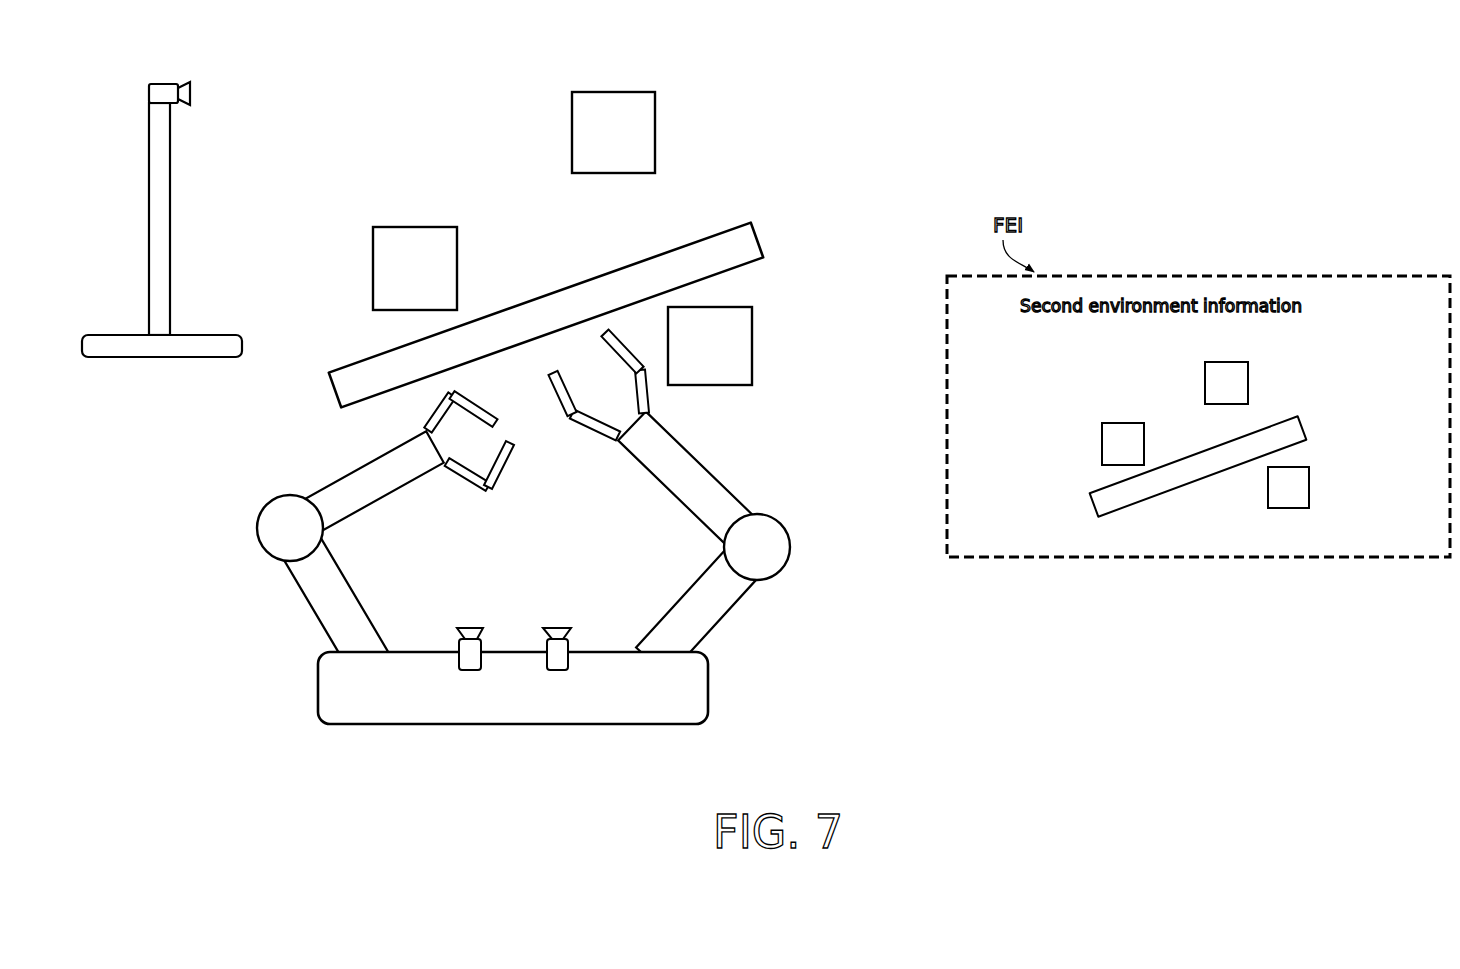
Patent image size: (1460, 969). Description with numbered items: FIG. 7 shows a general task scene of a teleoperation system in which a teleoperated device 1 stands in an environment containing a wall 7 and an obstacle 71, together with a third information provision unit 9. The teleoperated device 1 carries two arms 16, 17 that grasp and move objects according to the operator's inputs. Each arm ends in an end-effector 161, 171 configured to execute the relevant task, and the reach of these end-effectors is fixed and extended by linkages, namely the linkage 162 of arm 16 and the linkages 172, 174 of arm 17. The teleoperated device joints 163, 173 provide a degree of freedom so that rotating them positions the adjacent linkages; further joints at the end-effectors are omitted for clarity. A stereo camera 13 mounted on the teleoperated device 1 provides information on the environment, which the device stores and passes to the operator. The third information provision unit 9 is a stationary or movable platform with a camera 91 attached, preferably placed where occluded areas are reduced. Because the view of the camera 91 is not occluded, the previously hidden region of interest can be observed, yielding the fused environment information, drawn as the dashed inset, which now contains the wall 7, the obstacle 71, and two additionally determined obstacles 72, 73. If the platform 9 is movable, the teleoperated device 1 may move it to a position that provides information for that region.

The teleoperated device 1 is at (709, 684).
The stereo camera 13 is at (471, 622).
The arm 16 is at (677, 503).
The end-effector 161 is at (654, 393).
The linkage 162 is at (662, 464).
The teleoperated device joint 163 is at (754, 551).
The arm 17 is at (377, 492).
The end-effector 171 is at (370, 486).
The linkage 172 is at (401, 479).
The teleoperated device joint 173 is at (316, 525).
The linkage 174 is at (332, 609).
The wall 7 is at (761, 232).
The obstacle 71 is at (753, 332).
The obstacle 72 is at (656, 104).
The obstacle 73 is at (458, 269).
The third information provision unit 9 is at (173, 167).
The camera 91 is at (192, 92).